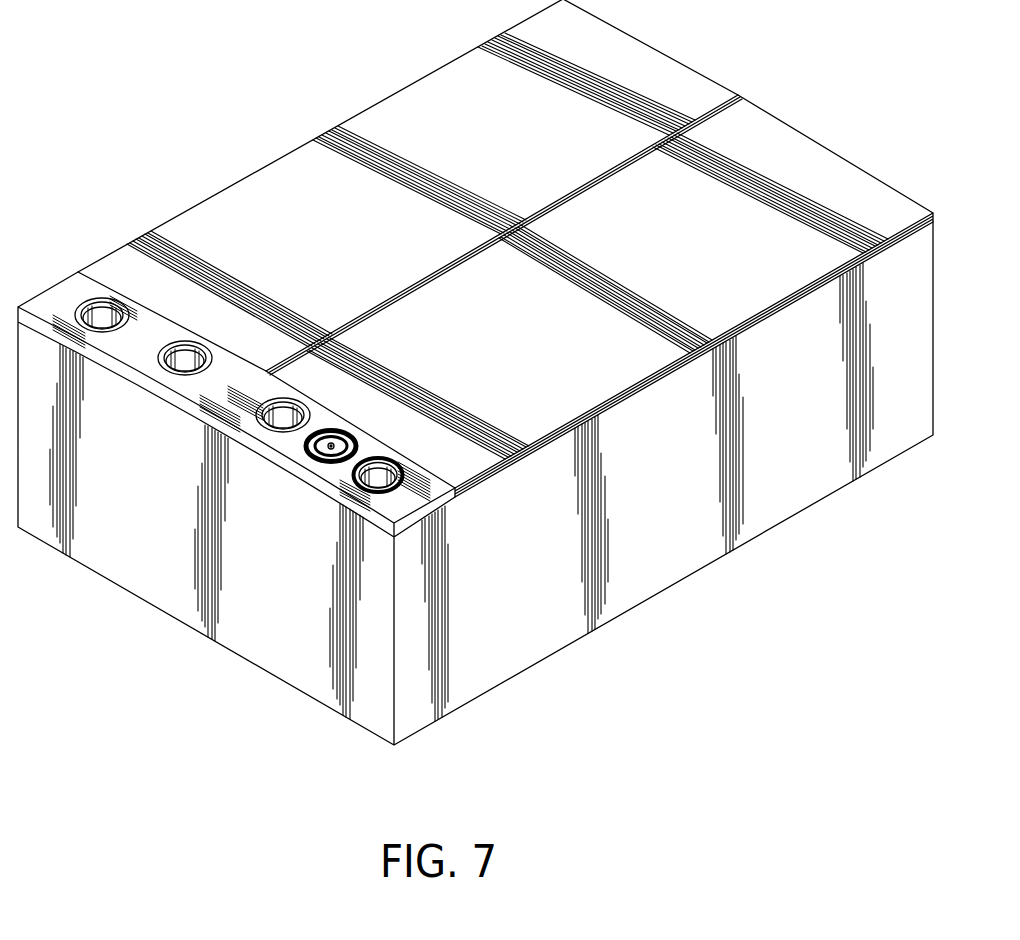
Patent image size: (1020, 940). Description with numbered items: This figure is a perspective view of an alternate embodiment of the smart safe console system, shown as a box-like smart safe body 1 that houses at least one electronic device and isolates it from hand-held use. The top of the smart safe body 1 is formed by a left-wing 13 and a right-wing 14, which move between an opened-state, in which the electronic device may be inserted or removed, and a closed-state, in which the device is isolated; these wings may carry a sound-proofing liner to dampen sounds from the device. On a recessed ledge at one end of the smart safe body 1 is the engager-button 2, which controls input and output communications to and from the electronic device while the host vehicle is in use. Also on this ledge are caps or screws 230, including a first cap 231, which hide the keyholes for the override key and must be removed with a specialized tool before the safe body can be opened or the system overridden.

The smart safe body 1 is at (675, 553).
The engager-button 2 is at (352, 491).
The left-wing 13 is at (393, 128).
The right-wing 14 is at (818, 182).
The caps or screws 230 is at (308, 444).
The first cap 231 is at (308, 444).